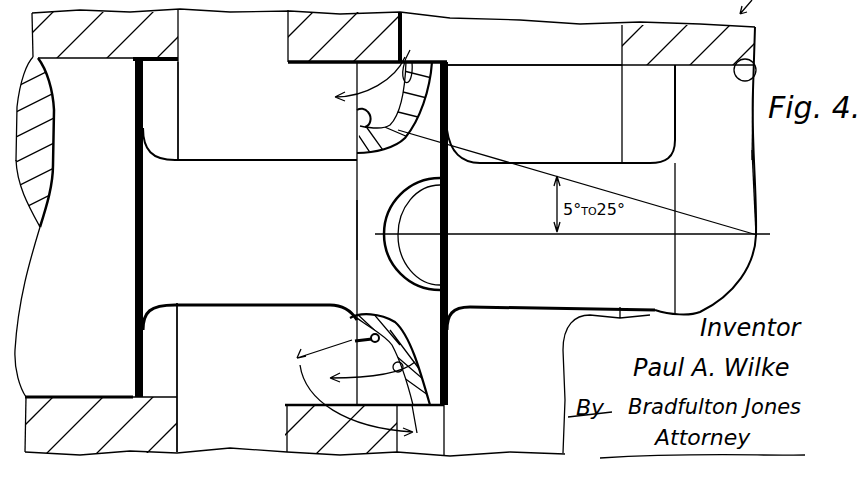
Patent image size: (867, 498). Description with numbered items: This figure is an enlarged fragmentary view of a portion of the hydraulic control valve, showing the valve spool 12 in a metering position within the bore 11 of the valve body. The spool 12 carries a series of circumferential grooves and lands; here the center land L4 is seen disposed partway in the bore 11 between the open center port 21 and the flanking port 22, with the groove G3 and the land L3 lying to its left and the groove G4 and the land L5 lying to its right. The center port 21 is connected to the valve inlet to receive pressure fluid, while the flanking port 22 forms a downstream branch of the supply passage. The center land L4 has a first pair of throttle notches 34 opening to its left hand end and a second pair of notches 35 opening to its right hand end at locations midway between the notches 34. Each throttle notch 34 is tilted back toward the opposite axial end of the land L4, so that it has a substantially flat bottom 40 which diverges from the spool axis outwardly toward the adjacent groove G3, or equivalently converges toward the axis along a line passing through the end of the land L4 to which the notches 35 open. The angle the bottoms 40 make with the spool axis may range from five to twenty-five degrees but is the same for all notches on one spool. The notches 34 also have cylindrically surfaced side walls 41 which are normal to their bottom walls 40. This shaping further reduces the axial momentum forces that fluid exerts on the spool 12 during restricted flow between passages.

The bore 11 is at (752, 72).
The valve element or spool 12 is at (744, 191).
The center port 21 is at (540, 89).
The flanking port 22 is at (238, 411).
The throttle notches 34 is at (370, 80).
The throttle notches 35 is at (427, 214).
The flat bottom 40 is at (356, 113).
The cylindrically surfaced side walls 41 is at (408, 60).
The land L3 is at (82, 259).
The center land L4 is at (365, 240).
The land L5 is at (740, 158).
The groove G3 is at (198, 158).
The groove G4 is at (573, 163).